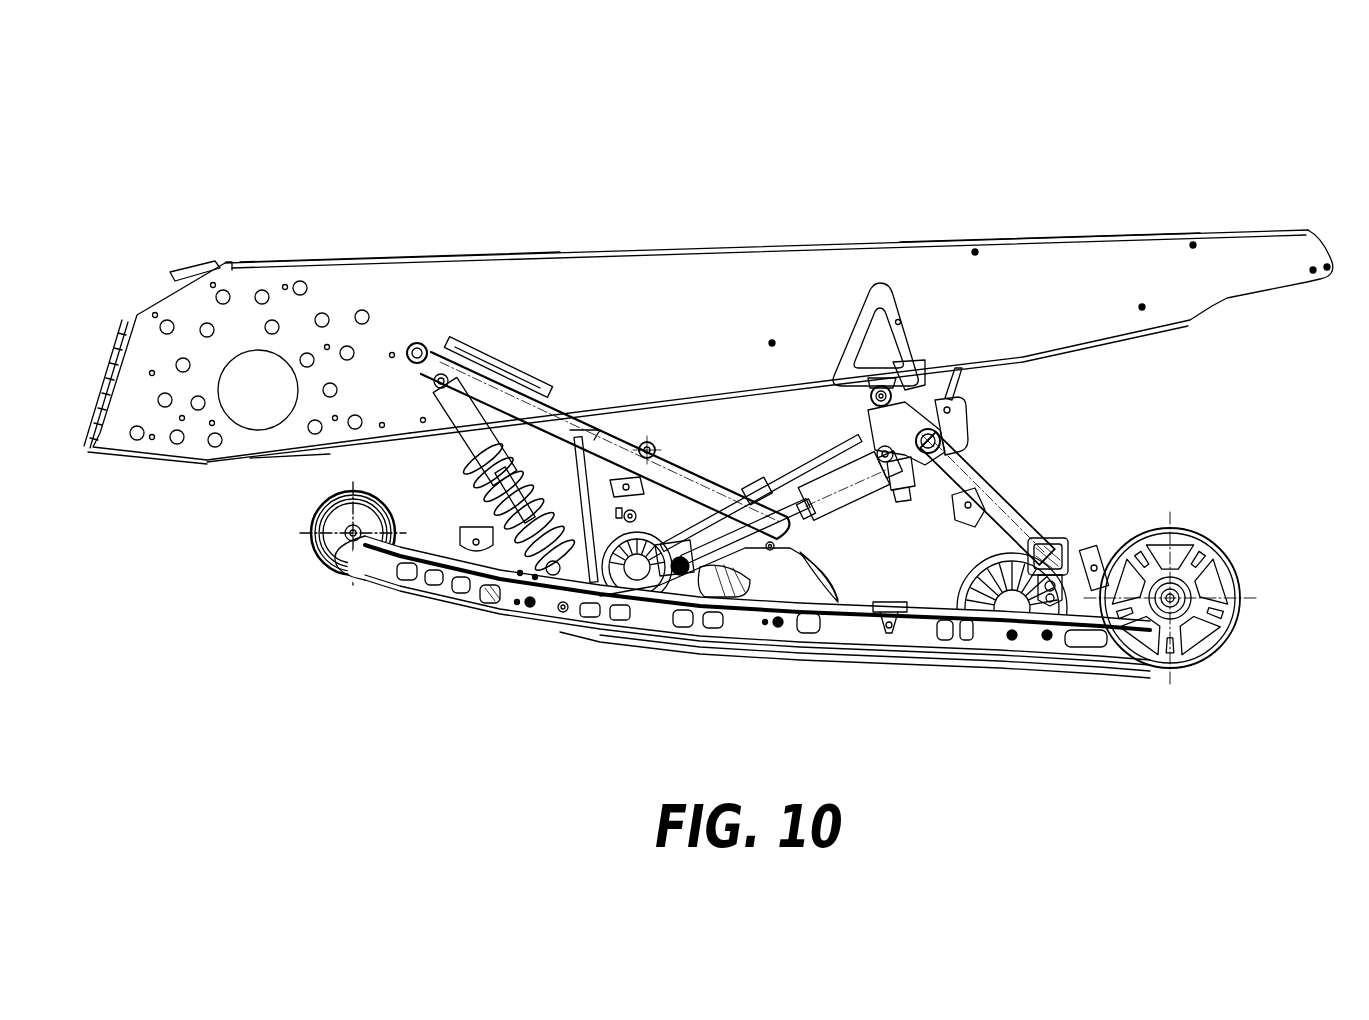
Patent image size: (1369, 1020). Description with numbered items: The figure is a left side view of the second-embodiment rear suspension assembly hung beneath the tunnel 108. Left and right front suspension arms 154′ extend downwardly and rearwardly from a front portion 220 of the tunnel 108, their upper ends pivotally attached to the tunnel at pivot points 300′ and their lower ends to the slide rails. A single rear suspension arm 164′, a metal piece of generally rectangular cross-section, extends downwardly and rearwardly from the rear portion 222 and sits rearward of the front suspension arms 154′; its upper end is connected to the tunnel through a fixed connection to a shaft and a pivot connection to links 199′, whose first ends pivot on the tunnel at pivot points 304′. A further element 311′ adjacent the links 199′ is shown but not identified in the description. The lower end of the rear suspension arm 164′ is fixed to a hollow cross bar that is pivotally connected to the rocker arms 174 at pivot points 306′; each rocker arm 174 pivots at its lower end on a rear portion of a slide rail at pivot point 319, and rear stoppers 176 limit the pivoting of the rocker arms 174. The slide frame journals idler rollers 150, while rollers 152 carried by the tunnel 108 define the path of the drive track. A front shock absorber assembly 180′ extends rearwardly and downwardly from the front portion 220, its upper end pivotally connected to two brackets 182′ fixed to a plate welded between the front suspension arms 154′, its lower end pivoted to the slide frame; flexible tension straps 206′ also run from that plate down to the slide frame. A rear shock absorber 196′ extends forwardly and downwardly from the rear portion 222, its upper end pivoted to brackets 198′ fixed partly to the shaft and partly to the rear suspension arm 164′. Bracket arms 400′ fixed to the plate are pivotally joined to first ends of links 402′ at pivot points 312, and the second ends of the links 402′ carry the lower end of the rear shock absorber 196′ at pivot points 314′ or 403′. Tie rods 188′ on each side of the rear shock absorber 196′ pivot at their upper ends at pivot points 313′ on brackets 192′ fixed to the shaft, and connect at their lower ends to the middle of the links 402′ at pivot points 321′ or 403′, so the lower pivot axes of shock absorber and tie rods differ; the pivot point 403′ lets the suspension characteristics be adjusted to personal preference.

The tunnel 108 is at (686, 262).
The front portion of the tunnel 220 is at (389, 264).
The rear portion of the tunnel 222 is at (997, 250).
The idler rollers 150 is at (1222, 543).
The rollers 152 is at (336, 494).
The front suspension arms 154′ is at (553, 408).
The rear suspension arm 164′ is at (980, 470).
The rocker arms 174 is at (1070, 570).
The rear stoppers 176 is at (1088, 550).
The front shock absorber assembly 180′ is at (468, 463).
The brackets 182′ is at (462, 343).
The tie rods 188′ is at (716, 470).
The brackets 192′ is at (918, 490).
The rear shock absorber 196′ is at (802, 446).
The brackets 198′ is at (955, 426).
The links 199′ is at (946, 395).
The flexible tension straps 206′ is at (578, 517).
The pivot points 300′ is at (418, 343).
The pivot points 304′ is at (894, 385).
The pivot points 306′ is at (1047, 538).
The upper link 311′ is at (950, 408).
The pivot points 312 is at (650, 441).
The pivot points 313′ is at (858, 426).
The pivot points 314′ is at (640, 517).
The pivot point 319 is at (1047, 642).
The pivot points 321′ is at (612, 506).
The bracket arms 400′ is at (632, 440).
The links 402′ is at (592, 598).
The pivot point 403′ is at (598, 618).